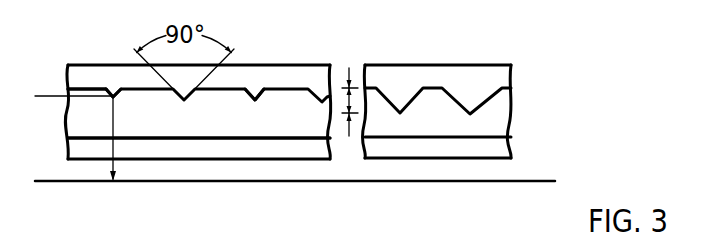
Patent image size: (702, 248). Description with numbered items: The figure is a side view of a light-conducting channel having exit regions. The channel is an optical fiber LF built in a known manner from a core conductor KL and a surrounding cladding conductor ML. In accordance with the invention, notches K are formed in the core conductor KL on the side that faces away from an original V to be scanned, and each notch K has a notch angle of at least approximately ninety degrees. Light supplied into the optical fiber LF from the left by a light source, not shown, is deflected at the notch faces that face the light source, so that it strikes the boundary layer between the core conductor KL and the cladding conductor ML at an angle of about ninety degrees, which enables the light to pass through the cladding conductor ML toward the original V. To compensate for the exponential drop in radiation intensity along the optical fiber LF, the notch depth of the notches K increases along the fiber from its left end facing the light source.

The cladding conductor ML is at (68, 75).
The core conductor KL is at (77, 118).
The notches K is at (113, 88).
The optical fiber LF is at (512, 110).
The original V is at (524, 182).